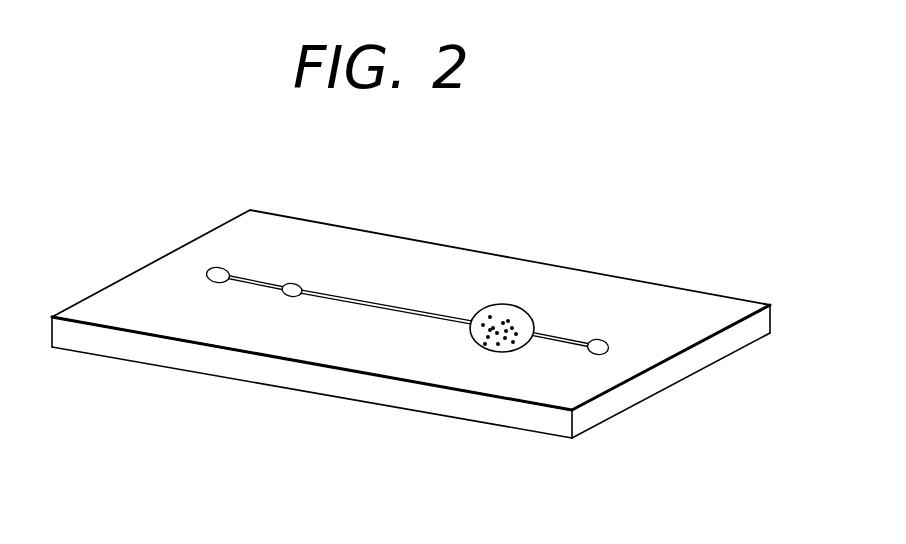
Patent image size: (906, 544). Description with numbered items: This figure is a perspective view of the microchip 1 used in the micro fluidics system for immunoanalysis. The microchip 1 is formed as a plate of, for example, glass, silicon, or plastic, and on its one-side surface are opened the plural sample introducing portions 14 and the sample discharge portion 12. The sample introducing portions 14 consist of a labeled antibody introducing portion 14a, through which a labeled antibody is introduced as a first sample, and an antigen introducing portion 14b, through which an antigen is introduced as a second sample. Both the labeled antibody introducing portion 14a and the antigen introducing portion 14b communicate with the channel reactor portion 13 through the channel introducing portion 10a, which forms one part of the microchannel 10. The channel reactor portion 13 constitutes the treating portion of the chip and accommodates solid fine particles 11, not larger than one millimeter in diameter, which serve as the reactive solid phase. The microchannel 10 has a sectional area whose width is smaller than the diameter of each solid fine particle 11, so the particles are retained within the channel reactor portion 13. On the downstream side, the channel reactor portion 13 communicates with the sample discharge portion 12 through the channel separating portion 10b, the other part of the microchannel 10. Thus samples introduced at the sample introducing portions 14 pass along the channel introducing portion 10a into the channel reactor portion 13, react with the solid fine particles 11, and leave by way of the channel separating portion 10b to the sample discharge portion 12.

The microchip 1 is at (615, 407).
The microchannel 10 is at (397, 315).
The channel introducing portion 10a is at (378, 312).
The channel separating portion 10b is at (558, 333).
The solid fine particles 11 is at (498, 350).
The sample discharge portion 12 is at (607, 338).
The channel reactor portion 13 is at (487, 347).
The sample introducing portions 14 is at (183, 384).
The labeled antibody introducing portion 14a is at (291, 297).
The antigen introducing portion 14b is at (216, 283).